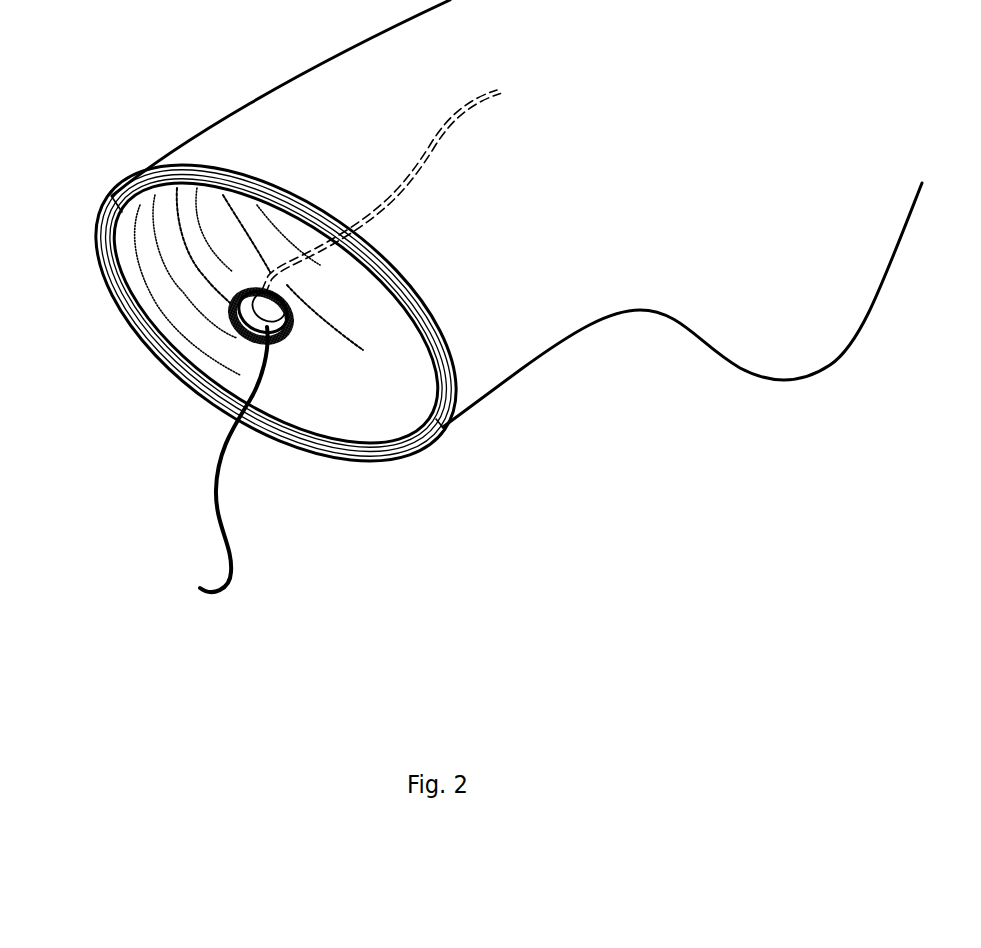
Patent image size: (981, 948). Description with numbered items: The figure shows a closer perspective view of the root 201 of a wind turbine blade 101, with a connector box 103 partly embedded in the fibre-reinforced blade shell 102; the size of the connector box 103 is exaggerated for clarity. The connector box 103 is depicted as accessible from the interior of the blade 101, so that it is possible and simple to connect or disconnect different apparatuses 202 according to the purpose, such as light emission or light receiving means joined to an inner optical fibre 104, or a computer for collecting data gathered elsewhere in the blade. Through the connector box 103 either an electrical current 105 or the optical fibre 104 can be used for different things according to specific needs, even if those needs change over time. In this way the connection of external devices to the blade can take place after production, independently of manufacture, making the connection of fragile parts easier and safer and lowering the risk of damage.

The blade 101 is at (570, 233).
The fibre-reinforced blade shell 102 is at (350, 402).
The connector box 103 is at (250, 308).
The optical fibre 104 is at (272, 278).
The electrical current 105 is at (383, 194).
The root 201 is at (473, 355).
The apparatuses 202 is at (260, 390).